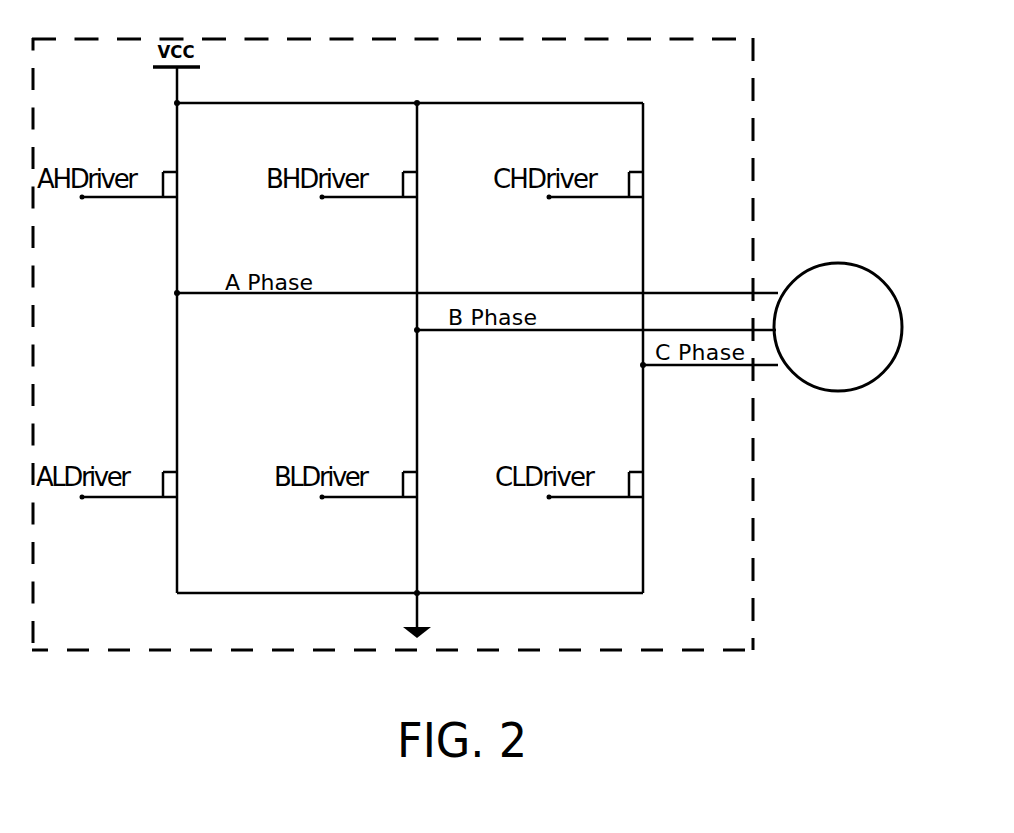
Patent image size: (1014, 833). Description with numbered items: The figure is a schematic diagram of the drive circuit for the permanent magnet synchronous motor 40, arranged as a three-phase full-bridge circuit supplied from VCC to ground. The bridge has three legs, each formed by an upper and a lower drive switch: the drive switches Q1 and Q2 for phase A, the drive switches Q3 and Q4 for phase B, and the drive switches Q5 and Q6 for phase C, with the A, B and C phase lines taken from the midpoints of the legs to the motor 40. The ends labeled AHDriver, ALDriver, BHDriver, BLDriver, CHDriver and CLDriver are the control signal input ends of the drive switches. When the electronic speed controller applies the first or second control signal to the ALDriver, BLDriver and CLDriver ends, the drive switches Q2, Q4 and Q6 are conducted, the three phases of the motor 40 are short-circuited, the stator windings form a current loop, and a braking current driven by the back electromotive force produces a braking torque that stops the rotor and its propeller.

The permanent magnet synchronous motor 40 is at (825, 368).
The drive switch Q1 is at (146, 186).
The drive switch Q2 is at (147, 486).
The drive switch Q3 is at (389, 186).
The drive switch Q4 is at (388, 486).
The drive switch Q5 is at (614, 186).
The drive switch Q6 is at (614, 486).